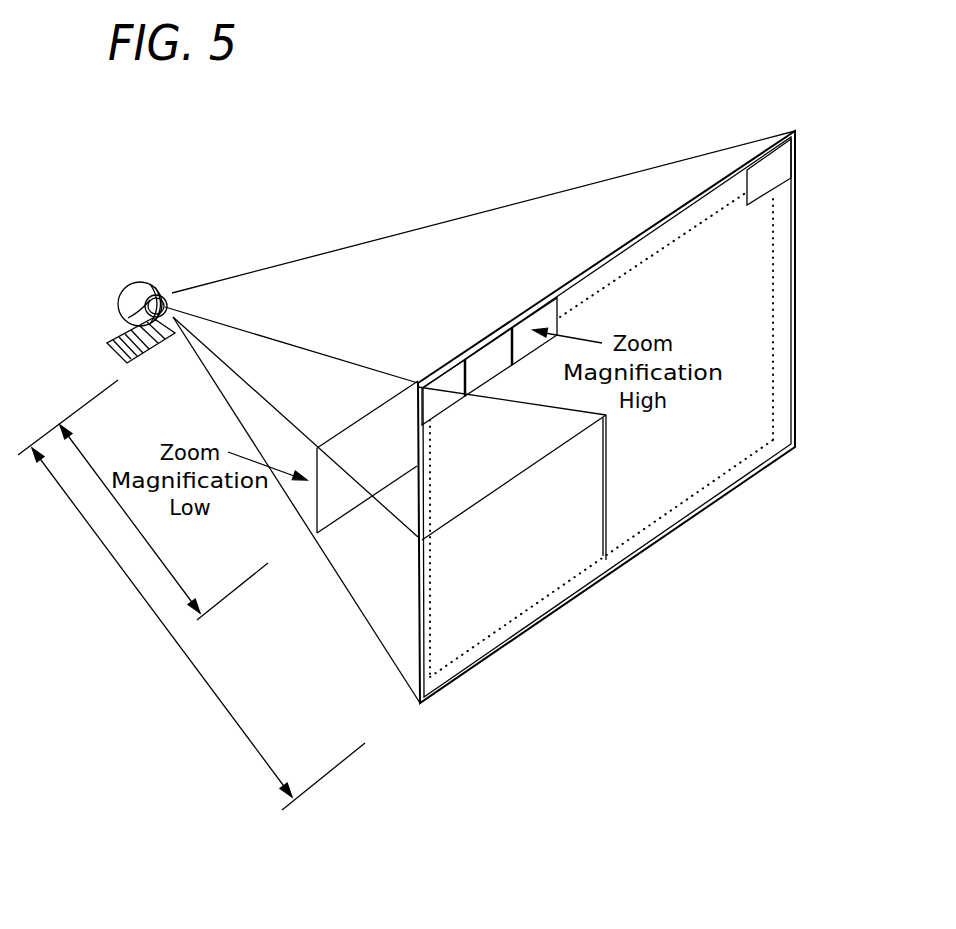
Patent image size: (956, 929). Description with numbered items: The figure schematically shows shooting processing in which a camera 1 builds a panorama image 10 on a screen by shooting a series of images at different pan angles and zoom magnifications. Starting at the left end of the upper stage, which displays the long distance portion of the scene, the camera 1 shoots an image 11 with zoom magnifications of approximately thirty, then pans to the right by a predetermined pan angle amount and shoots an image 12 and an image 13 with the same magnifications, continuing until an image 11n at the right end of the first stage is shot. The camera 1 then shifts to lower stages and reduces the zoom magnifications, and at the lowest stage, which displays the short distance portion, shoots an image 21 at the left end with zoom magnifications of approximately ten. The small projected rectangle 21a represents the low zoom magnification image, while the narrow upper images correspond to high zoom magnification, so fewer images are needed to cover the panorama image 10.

The camera 1 is at (135, 278).
The panorama image 10 is at (640, 552).
The image 11 is at (452, 377).
The image 12 is at (490, 358).
The image 13 is at (545, 317).
The image 11n is at (775, 160).
The image 21 is at (515, 582).
The projected image at low zoom magnification 21a is at (332, 503).